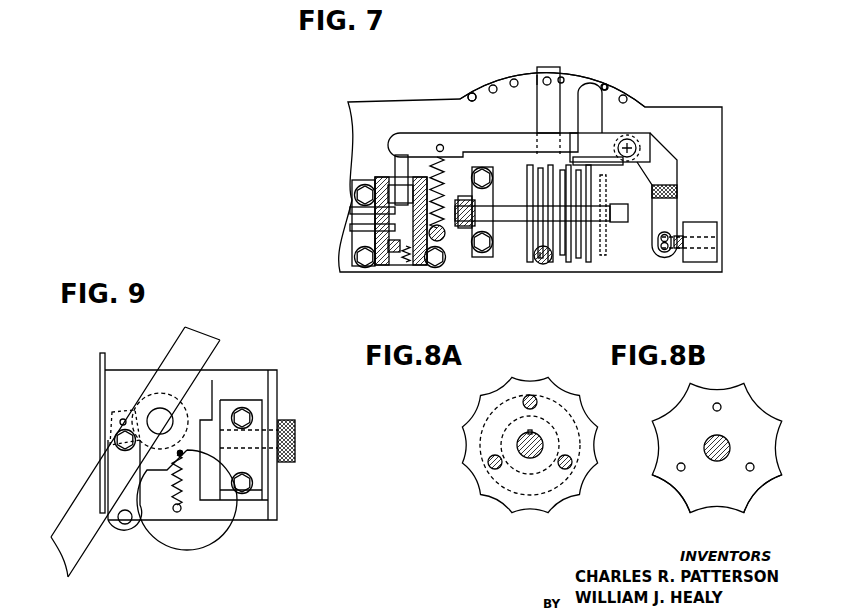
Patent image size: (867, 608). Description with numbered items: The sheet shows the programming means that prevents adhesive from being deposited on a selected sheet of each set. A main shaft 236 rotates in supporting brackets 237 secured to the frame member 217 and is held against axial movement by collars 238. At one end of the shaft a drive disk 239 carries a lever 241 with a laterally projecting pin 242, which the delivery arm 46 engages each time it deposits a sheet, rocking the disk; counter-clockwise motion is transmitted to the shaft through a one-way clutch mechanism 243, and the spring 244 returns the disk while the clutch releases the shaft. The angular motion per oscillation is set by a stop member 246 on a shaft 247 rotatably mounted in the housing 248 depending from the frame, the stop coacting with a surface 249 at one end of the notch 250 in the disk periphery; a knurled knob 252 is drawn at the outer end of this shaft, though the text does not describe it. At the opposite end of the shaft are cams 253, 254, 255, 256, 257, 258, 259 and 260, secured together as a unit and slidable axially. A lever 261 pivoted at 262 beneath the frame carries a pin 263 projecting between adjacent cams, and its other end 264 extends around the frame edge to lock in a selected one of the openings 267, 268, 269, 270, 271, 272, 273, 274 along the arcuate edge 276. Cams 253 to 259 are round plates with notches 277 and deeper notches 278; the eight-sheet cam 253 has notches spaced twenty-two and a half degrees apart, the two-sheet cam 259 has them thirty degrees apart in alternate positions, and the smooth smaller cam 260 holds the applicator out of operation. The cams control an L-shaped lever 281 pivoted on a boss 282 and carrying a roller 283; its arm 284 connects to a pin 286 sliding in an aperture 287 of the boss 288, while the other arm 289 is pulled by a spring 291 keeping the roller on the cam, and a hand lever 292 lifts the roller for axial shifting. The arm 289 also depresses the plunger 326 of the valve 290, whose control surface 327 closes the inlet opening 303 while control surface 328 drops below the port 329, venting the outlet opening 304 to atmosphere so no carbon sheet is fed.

In FIG. 7, the frame member 217 is at (700, 160).
In FIG. 7, the main shaft 236 is at (541, 222).
In FIG. 9, the main shaft 236 is at (155, 413).
In FIG. 8A, the main shaft 236 is at (517, 445).
In FIG. 7, the supporting brackets 237 is at (470, 240).
In FIG. 7, the collars 238 is at (452, 232).
In FIG. 9, the drive disk 239 is at (115, 395).
In FIG. 9, the lever 241 is at (133, 495).
In FIG. 9, the pin 242 is at (125, 522).
In FIG. 9, the one-way clutch mechanism 243 is at (125, 425).
In FIG. 9, the spring 244 is at (180, 490).
In FIG. 9, the stop member 246 is at (190, 455).
In FIG. 9, the shaft 247 is at (262, 455).
In FIG. 9, the housing 248 is at (258, 488).
In FIG. 9, the surface 249 is at (215, 400).
In FIG. 9, the notch 250 is at (181, 455).
In FIG. 9, the knurled knob 252 is at (297, 435).
In FIG. 7, the cam 253 is at (530, 260).
In FIG. 8A, the cam 253 is at (478, 470).
In FIG. 7, the cam 254 is at (538, 262).
In FIG. 7, the cam 255 is at (552, 262).
In FIG. 7, the cam 256 is at (566, 262).
In FIG. 7, the cam 257 is at (574, 262).
In FIG. 7, the cam 258 is at (585, 262).
In FIG. 7, the cam 259 is at (595, 262).
In FIG. 8B, the cam 259 is at (666, 458).
In FIG. 7, the cam 260 is at (606, 235).
In FIG. 7, the lever 261 is at (547, 122).
In FIG. 7, the pivot 262 is at (545, 262).
In FIG. 7, the pin 263 is at (548, 178).
In FIG. 7, the other end of the lever 264 is at (548, 72).
In FIG. 7, the opening 267 is at (627, 99).
In FIG. 7, the opening 268 is at (606, 88).
In FIG. 7, the opening 269 is at (583, 82).
In FIG. 7, the opening 270 is at (561, 77).
In FIG. 7, the opening 271 is at (536, 78).
In FIG. 7, the opening 272 is at (512, 79).
In FIG. 7, the opening 273 is at (489, 86).
In FIG. 7, the opening 274 is at (467, 98).
In FIG. 7, the arcuate edge 276 is at (466, 92).
In FIG. 8A, the notches 277 is at (468, 418).
In FIG. 8B, the notches 277 is at (683, 502).
In FIG. 8A, the notches 278 is at (530, 380).
In FIG. 8B, the notches 278 is at (770, 420).
In FIG. 7, the L-shaped lever 281 is at (605, 143).
In FIG. 7, the boss 282 is at (640, 152).
In FIG. 7, the roller 283 is at (588, 163).
In FIG. 7, the arm 284 is at (666, 212).
In FIG. 7, the pin 286 is at (676, 248).
In FIG. 7, the aperture 287 is at (717, 237).
In FIG. 7, the boss 288 is at (712, 255).
In FIG. 7, the arm 289 is at (470, 145).
In FIG. 7, the valve 290 is at (392, 268).
In FIG. 7, the spring 291 is at (433, 157).
In FIG. 7, the hand lever 292 is at (590, 115).
In FIG. 7, the inlet opening 303 is at (350, 210).
In FIG. 7, the outlet opening 304 is at (350, 228).
In FIG. 7, the plunger 326 is at (380, 160).
In FIG. 7, the control surface 327 is at (390, 190).
In FIG. 7, the control surface 328 is at (360, 266).
In FIG. 7, the port 329 is at (388, 246).
In FIG. 9, the delivery arm 46 is at (88, 473).